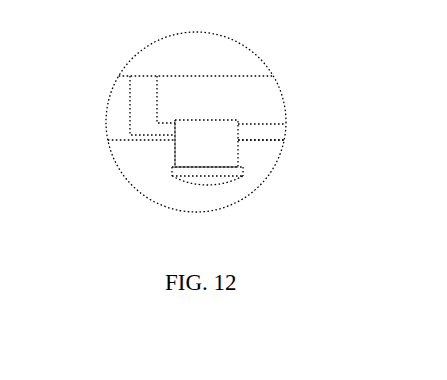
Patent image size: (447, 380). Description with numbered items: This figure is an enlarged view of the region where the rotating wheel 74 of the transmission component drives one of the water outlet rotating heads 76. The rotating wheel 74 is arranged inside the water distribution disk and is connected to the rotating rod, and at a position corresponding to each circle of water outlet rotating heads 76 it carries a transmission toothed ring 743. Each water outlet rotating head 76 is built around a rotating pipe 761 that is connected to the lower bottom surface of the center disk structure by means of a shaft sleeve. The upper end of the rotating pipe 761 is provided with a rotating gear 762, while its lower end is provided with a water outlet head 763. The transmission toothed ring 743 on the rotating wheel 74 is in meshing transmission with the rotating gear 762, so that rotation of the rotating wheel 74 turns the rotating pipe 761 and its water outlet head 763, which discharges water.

The rotating wheel 74 is at (235, 85).
The transmission toothed ring 743 is at (135, 106).
The water outlet rotating head 76 is at (242, 159).
The rotating pipe 761 is at (175, 158).
The rotating gear 762 is at (259, 122).
The water outlet head 763 is at (200, 188).